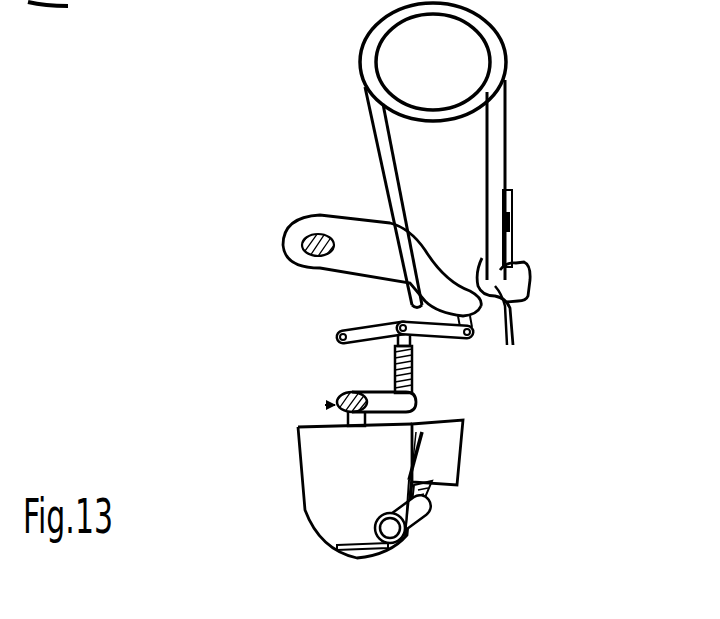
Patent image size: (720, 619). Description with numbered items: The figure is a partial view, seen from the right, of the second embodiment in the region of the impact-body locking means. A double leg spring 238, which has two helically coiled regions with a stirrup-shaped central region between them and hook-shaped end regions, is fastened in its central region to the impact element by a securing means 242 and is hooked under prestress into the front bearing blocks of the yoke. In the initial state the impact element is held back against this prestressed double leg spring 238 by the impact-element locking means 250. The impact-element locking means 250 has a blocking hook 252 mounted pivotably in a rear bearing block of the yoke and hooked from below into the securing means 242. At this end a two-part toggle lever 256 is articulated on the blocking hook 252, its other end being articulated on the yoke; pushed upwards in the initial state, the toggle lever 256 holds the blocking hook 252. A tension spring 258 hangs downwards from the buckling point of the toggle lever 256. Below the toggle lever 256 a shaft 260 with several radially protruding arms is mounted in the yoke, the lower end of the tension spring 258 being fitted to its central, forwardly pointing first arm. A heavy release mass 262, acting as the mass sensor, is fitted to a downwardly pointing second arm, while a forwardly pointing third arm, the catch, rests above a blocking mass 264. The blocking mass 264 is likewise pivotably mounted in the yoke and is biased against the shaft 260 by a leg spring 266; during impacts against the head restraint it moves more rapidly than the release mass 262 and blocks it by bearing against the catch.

The double leg spring 238 is at (492, 150).
The securing means 242 is at (510, 237).
The impact-element locking means 250 is at (304, 343).
The blocking hook 252 is at (517, 292).
The two-part toggle lever 256 is at (356, 323).
The tension spring 258 is at (415, 368).
The shaft 260 is at (325, 405).
The release mass 262 is at (317, 487).
The blocking mass 264 is at (443, 450).
The leg spring 266 is at (455, 485).